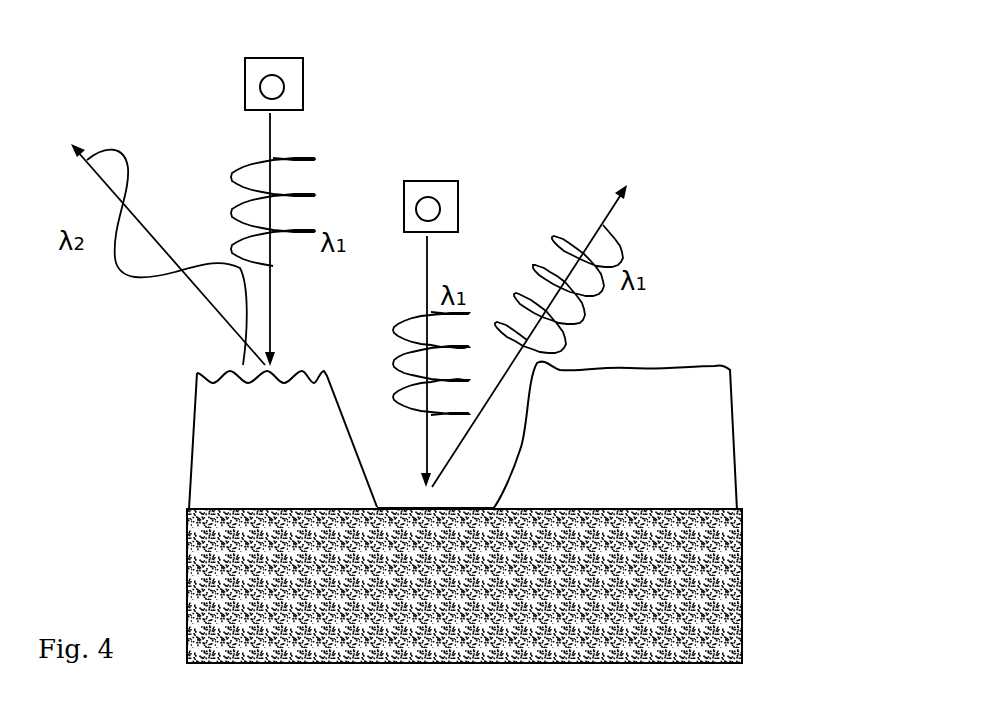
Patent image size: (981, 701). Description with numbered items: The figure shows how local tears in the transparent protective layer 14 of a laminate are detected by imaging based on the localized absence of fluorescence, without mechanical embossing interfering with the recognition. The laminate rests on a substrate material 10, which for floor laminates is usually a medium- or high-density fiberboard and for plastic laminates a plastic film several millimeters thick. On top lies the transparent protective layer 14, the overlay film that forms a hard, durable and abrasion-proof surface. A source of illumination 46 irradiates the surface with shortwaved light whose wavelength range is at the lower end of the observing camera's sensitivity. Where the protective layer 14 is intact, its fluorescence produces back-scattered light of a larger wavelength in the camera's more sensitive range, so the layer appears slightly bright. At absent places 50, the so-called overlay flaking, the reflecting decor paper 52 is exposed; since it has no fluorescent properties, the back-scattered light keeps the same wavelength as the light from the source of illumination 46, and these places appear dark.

The substrate material 10 is at (703, 590).
The transparent protective layer 14 is at (710, 424).
The source of illumination 46 is at (296, 78).
The absent places 50 is at (383, 447).
The decor paper 52 is at (406, 506).